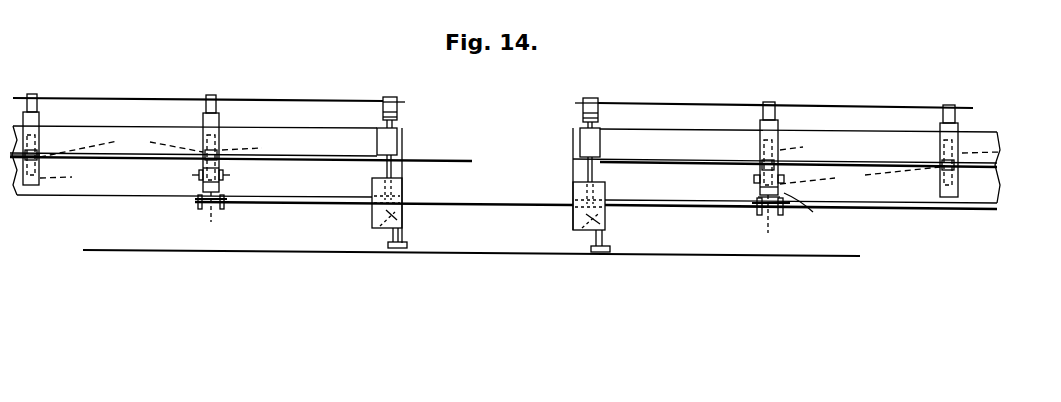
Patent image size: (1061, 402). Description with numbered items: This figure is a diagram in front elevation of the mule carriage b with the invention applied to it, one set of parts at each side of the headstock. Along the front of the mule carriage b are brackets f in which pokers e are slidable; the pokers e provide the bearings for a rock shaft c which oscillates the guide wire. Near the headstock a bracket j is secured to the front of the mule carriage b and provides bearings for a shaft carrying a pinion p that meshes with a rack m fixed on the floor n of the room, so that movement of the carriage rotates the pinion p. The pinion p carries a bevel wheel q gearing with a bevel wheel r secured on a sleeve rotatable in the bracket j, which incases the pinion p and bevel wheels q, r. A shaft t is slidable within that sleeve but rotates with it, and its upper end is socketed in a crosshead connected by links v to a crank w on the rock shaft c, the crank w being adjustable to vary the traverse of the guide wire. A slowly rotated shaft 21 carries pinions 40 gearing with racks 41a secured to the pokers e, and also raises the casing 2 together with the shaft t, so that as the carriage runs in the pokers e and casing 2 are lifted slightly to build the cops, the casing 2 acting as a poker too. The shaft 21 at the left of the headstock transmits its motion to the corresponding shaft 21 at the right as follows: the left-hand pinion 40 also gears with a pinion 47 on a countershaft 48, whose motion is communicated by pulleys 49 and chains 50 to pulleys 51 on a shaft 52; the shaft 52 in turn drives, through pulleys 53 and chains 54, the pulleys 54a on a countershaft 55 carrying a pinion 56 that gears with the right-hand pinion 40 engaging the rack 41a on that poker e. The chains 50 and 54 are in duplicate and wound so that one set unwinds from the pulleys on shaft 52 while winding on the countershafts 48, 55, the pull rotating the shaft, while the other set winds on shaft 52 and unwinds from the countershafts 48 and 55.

The casing 2 is at (377, 142).
The shaft 21 is at (467, 158).
The pinion 40 is at (490, 159).
The rack 41a is at (536, 161).
The pinion 47 is at (216, 217).
The countershaft 48 is at (252, 177).
The pulleys 49 is at (198, 172).
The chains 50 is at (200, 186).
The pulleys 51 is at (197, 209).
The shaft 52 is at (313, 204).
The pulleys 53 is at (759, 217).
The chains 54 is at (757, 197).
The pulleys 54a is at (754, 179).
The countershaft 55 is at (758, 187).
The pinion 56 is at (779, 222).
The mule carriage b is at (132, 181).
The rock shaft c is at (133, 98).
The pokers e is at (33, 97).
The brackets f is at (40, 132).
The crank w is at (393, 93).
The links v is at (398, 116).
The bracket j is at (376, 185).
The shaft t is at (404, 173).
The bevel wheel r is at (384, 208).
The pinion p is at (399, 222).
The bevel wheel q is at (393, 221).
The rack m is at (407, 243).
The floor n is at (503, 241).